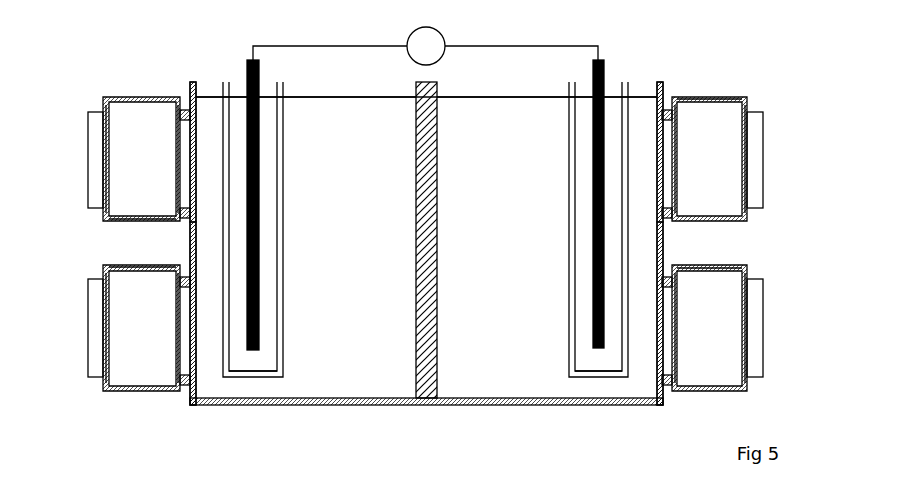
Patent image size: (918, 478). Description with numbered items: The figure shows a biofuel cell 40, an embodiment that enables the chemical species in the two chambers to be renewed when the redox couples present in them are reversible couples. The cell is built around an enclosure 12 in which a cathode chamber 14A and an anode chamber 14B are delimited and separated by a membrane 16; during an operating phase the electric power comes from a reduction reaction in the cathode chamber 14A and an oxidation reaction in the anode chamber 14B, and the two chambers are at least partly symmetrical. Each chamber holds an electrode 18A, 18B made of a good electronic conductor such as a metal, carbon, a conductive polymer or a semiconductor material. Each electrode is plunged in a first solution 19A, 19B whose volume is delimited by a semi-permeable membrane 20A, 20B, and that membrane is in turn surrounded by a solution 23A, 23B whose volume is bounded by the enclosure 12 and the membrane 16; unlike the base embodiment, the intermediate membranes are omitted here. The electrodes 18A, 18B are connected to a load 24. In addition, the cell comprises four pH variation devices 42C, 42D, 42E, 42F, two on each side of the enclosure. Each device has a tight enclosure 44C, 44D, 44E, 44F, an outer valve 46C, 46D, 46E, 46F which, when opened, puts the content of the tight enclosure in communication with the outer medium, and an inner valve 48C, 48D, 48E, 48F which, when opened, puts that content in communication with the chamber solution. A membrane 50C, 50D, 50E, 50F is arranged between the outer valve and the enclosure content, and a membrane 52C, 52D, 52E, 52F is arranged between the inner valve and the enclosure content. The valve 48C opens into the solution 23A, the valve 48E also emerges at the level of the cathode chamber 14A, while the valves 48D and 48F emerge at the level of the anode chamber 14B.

The enclosure 12 is at (592, 406).
The cathode chamber 14A is at (235, 385).
The anode chamber 14B is at (609, 385).
The membrane 16 is at (432, 365).
The electrode 18A is at (259, 304).
The electrode 18B is at (593, 337).
The first solution 19A is at (243, 103).
The first solution 19B is at (612, 110).
The semi-permeable membrane 20A is at (253, 378).
The semi-permeable membrane 20B is at (567, 363).
The solution 23A is at (372, 376).
The solution 23B is at (465, 382).
The load 24 is at (410, 34).
The biofuel cell 40 is at (436, 442).
The pH variation device 42C is at (139, 92).
The pH variation device 42D is at (712, 92).
The pH variation device 42E is at (145, 396).
The pH variation device 42F is at (724, 398).
The tight enclosure 44C is at (112, 222).
The tight enclosure 44D is at (733, 97).
The tight enclosure 44E is at (113, 265).
The tight enclosure 44F is at (698, 265).
The valve 46C is at (90, 135).
The valve 46D is at (755, 127).
The valve 46E is at (95, 370).
The valve 46F is at (755, 293).
The valve 48C is at (187, 117).
The valve 48D is at (666, 122).
The valve 48E is at (186, 276).
The valve 48F is at (667, 370).
The membrane 50C is at (107, 118).
The membrane 50D is at (747, 170).
The membrane 50E is at (108, 358).
The membrane 50F is at (748, 335).
The membrane 52C is at (177, 133).
The membrane 52D is at (678, 128).
The membrane 52E is at (176, 363).
The membrane 52F is at (677, 352).